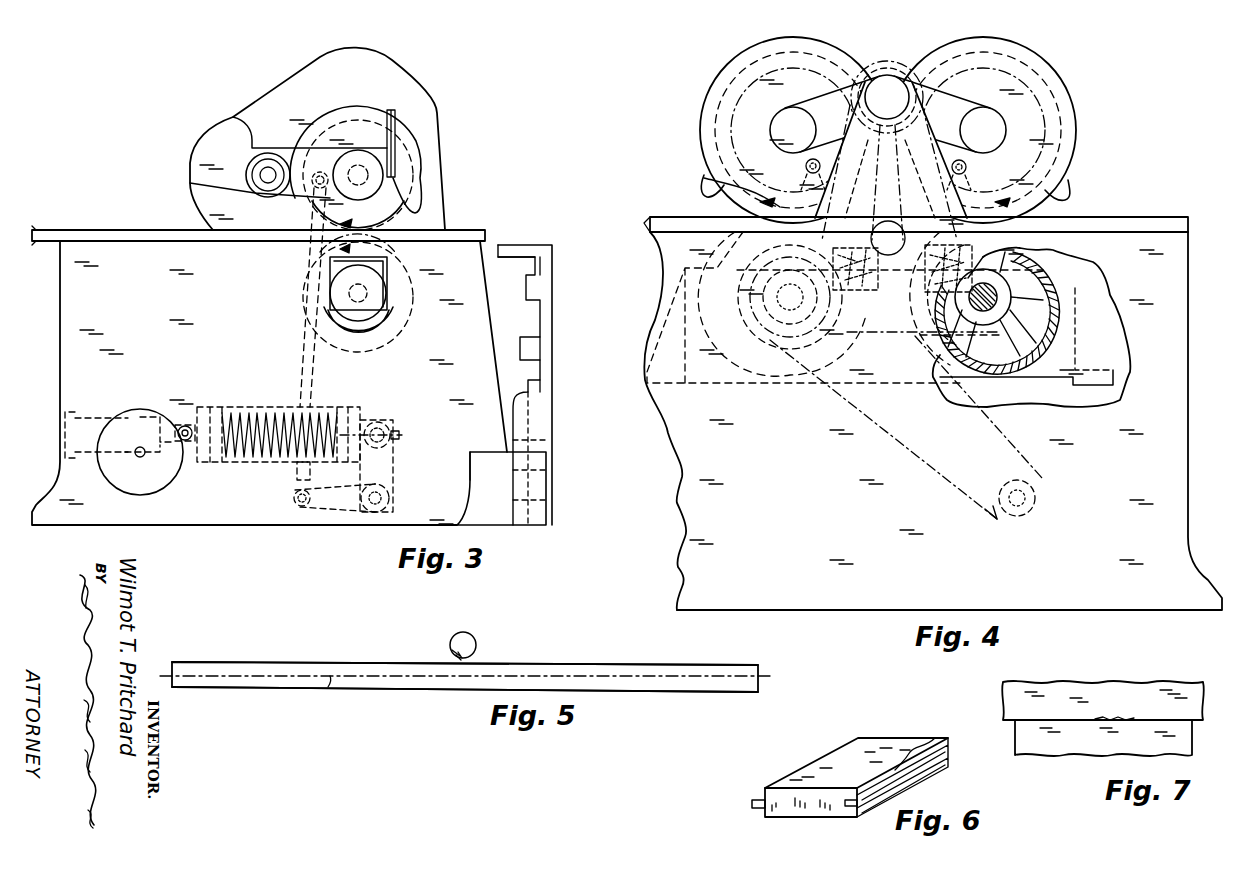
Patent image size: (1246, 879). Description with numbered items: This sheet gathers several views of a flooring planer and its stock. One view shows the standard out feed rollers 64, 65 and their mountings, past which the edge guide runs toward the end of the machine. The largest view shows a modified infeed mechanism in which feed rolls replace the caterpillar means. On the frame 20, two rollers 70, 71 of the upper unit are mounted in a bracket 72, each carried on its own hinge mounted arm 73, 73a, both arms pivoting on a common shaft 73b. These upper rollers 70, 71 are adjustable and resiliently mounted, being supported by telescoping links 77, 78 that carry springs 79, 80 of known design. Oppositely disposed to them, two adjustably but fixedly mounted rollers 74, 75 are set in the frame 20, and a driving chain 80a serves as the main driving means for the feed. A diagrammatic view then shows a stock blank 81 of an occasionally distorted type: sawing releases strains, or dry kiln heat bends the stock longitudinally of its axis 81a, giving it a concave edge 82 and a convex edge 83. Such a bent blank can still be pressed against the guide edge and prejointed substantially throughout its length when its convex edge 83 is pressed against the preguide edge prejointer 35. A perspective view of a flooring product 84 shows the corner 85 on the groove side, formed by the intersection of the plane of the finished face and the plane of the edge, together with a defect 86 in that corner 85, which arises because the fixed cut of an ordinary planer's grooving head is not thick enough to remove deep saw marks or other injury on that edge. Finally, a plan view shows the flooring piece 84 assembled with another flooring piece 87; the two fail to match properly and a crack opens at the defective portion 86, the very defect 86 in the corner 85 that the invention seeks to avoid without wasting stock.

In FIG. 4, the frame 20 is at (1185, 422).
In FIG. 5, the preguide edge prejointer 35 is at (468, 637).
In FIG. 3, the out feed roller 64 is at (405, 327).
In FIG. 3, the out feed roller 65 is at (390, 207).
In FIG. 4, the roller 70 is at (1062, 195).
In FIG. 4, the roller 71 is at (727, 184).
In FIG. 4, the bracket 72 is at (1072, 138).
In FIG. 4, the hinge mounted arm 73 is at (958, 105).
In FIG. 4, the hinge mounted arm 73a is at (805, 118).
In FIG. 4, the shaft 73b is at (887, 90).
In FIG. 4, the roller 74 is at (1052, 316).
In FIG. 4, the roller 75 is at (753, 372).
In FIG. 4, the telescoping link 77 is at (933, 161).
In FIG. 4, the telescoping link 78 is at (840, 161).
In FIG. 4, the spring 79 is at (976, 355).
In FIG. 4, the spring 80 is at (840, 303).
In FIG. 4, the driving chain 80a is at (918, 456).
In FIG. 5, the stock blank 81 is at (578, 665).
In FIG. 5, the axis 81a is at (329, 688).
In FIG. 5, the concave edge 82 is at (267, 696).
In FIG. 5, the convex edge 83 is at (296, 655).
In FIG. 6, the flooring product 84 is at (880, 745).
In FIG. 7, the flooring product 84 is at (1158, 695).
In FIG. 6, the corner 85 is at (870, 786).
In FIG. 6, the defect 86 is at (914, 742).
In FIG. 7, the defect 86 is at (1108, 718).
In FIG. 7, the flooring piece 87 is at (1036, 738).